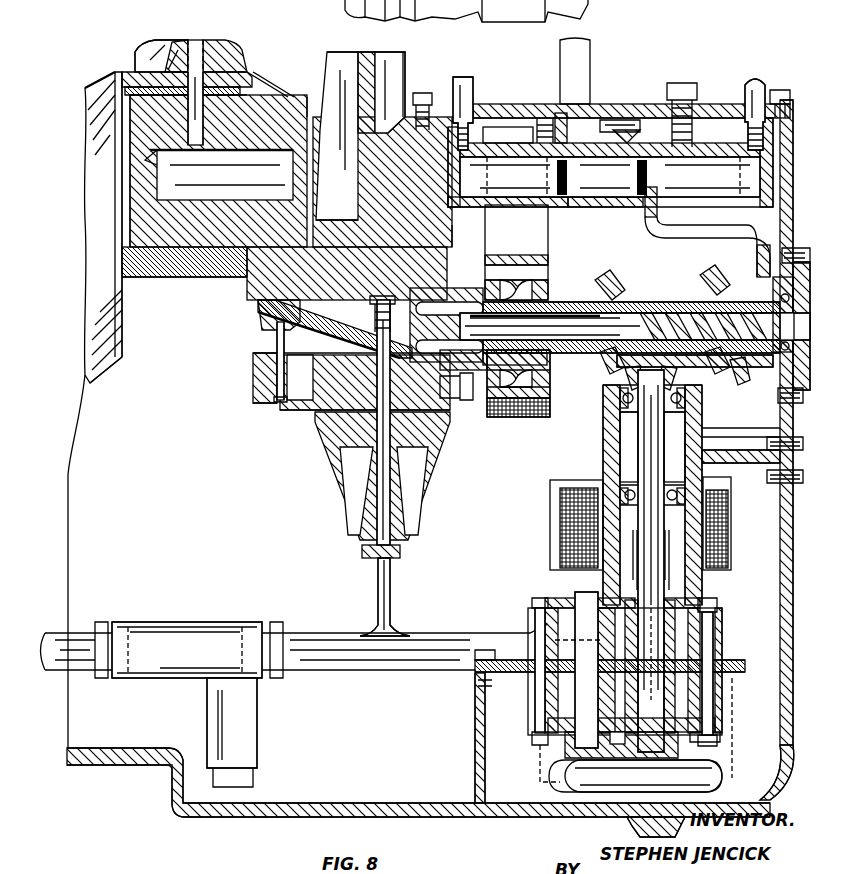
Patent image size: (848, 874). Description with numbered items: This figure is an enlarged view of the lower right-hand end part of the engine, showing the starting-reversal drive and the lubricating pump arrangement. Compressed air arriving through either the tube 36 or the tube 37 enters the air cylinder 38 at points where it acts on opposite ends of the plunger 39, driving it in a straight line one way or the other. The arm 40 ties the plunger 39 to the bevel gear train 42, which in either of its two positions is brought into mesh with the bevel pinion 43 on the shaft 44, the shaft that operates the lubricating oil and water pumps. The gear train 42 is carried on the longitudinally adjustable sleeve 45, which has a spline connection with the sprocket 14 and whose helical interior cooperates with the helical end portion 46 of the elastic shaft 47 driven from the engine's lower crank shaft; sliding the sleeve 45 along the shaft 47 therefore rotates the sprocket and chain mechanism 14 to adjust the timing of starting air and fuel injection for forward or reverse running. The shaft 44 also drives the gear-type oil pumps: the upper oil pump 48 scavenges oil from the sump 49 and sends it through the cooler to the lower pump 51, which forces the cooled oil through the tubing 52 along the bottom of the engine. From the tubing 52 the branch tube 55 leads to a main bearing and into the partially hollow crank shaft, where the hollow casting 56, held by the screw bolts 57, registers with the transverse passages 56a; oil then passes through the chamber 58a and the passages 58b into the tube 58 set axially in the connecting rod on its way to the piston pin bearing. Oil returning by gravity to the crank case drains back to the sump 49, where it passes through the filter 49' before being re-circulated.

The sprocket 14 is at (566, 3).
The tube 36 is at (450, 78).
The tube 37 is at (745, 85).
The air cylinder 38 is at (545, 178).
The plunger 39 is at (612, 185).
The arm 40 is at (648, 215).
The bevel gear train 42 is at (640, 278).
The bevel pinion 43 is at (690, 378).
The shaft 44 is at (644, 435).
The longitudinally adjustable sleeve 45 is at (598, 352).
The helical end portion 46 is at (690, 298).
The elastic shaft 47 is at (580, 318).
The upper oil pump 48 is at (705, 640).
The sump 49 is at (437, 743).
The filter 49' is at (615, 523).
The lower pump 51 is at (372, 320).
The tubing 52 is at (330, 640).
The branch tube 55 is at (392, 600).
The hollow casting 56 is at (262, 316).
The transverse passages 56a is at (320, 418).
The screw bolts 57 is at (275, 352).
The tube 58 is at (198, 38).
The chamber 58a is at (157, 168).
The passages 58b is at (205, 118).